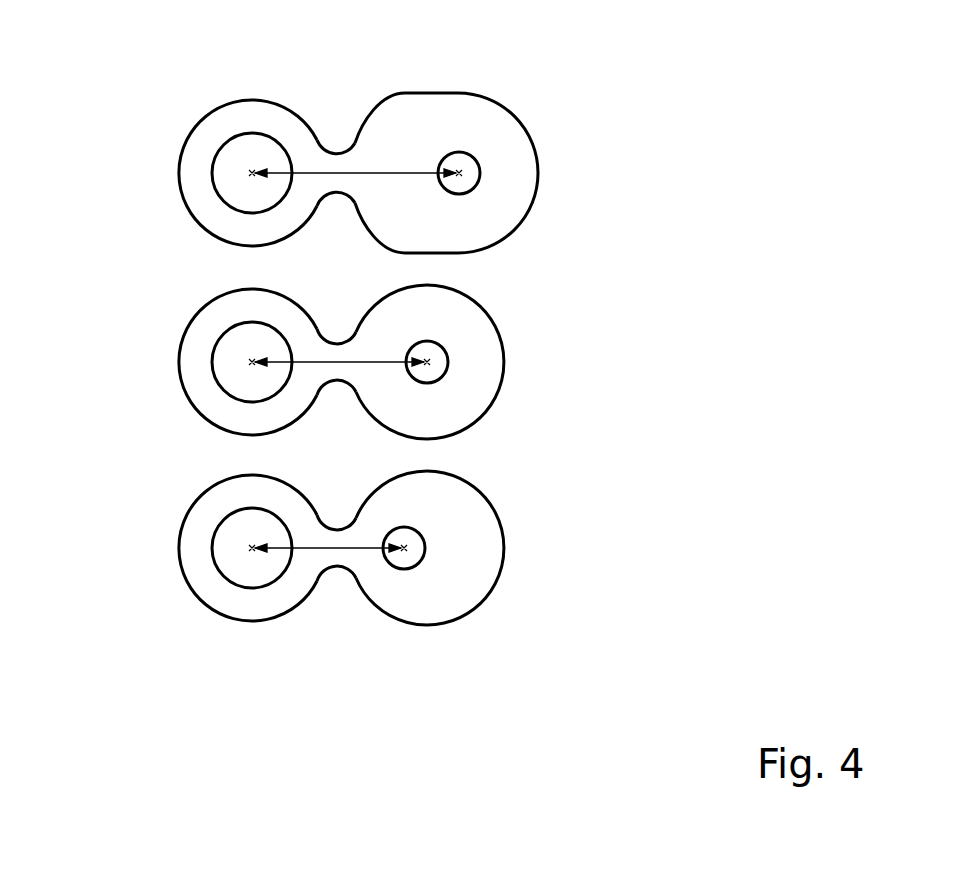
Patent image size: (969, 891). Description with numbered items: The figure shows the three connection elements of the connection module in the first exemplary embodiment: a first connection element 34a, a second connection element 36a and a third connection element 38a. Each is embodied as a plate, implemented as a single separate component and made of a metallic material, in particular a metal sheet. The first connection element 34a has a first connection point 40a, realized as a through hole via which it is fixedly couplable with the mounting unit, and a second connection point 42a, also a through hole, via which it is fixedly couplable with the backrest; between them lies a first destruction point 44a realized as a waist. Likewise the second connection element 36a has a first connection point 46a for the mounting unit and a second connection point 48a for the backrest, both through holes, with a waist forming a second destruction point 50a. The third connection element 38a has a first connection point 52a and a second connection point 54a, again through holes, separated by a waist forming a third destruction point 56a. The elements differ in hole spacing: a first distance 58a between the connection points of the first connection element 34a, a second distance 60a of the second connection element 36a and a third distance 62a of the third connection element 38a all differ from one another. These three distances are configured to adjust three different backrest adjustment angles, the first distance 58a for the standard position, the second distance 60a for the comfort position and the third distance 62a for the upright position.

The first connection element 34a is at (448, 407).
The second connection element 36a is at (482, 218).
The third connection element 38a is at (430, 595).
The first connection point of the first connection element 40a is at (235, 372).
The second connection point of the first connection element 42a is at (434, 356).
The first destruction point 44a is at (334, 347).
The first connection point of the second connection element 46a is at (240, 187).
The second connection point of the second connection element 48a is at (465, 171).
The second destruction point 50a is at (334, 158).
The first connection point of the third connection element 52a is at (237, 557).
The second connection point of the third connection element 54a is at (413, 547).
The third destruction point 56a is at (334, 533).
The first distance 58a is at (376, 361).
The second distance 60a is at (405, 173).
The third distance 62a is at (370, 549).